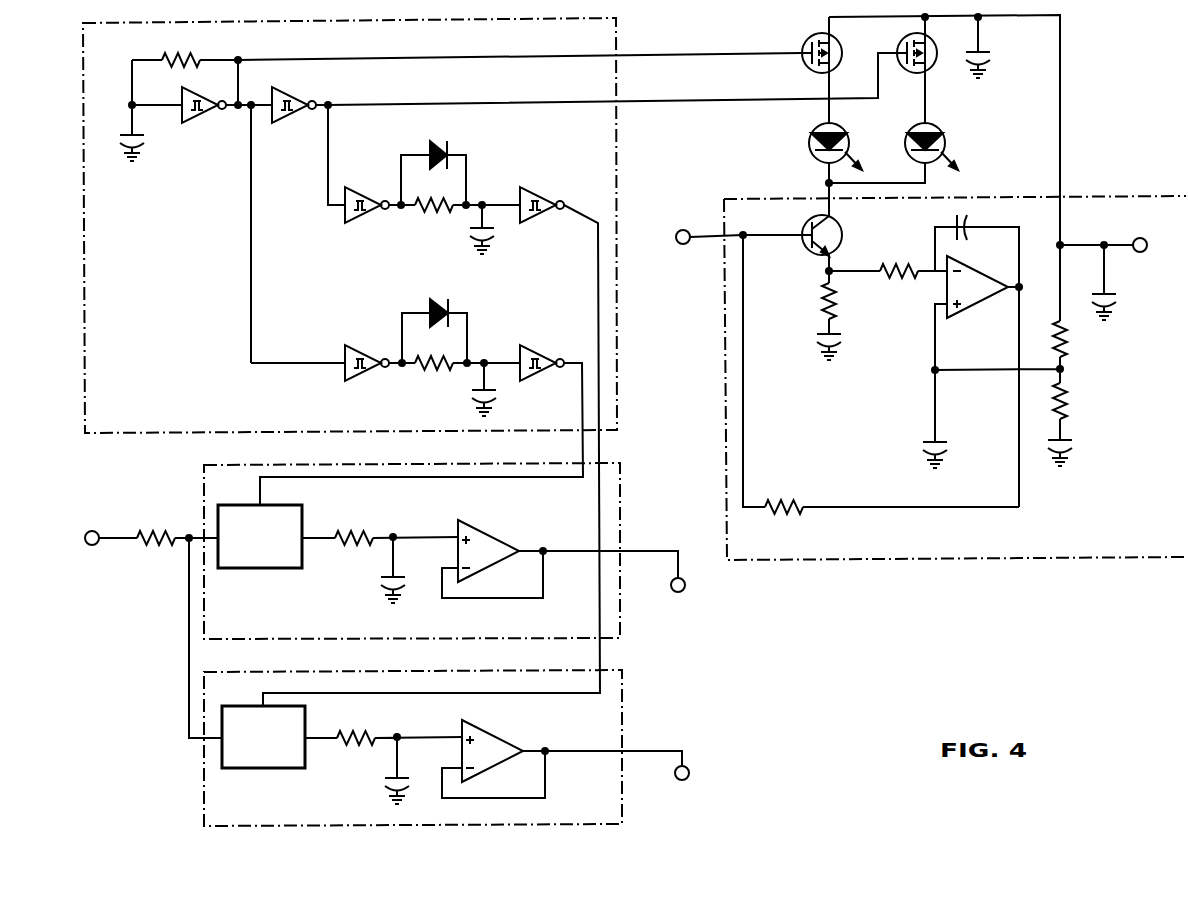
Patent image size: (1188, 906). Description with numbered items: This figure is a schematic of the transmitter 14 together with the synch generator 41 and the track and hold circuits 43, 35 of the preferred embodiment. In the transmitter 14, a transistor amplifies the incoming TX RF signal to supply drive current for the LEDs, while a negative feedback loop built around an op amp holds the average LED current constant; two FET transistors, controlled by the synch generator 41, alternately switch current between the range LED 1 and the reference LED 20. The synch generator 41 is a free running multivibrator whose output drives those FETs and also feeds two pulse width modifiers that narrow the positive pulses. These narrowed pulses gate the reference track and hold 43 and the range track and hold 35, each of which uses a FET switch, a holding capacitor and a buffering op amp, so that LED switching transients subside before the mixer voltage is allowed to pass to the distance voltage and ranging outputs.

The range LED 1 is at (810, 152).
The reference LED 20 is at (945, 143).
The synch generator 41 is at (618, 190).
The reference track and hold circuit 43 is at (622, 527).
The range track and hold circuit 35 is at (623, 718).
The transmitter 14 is at (920, 327).